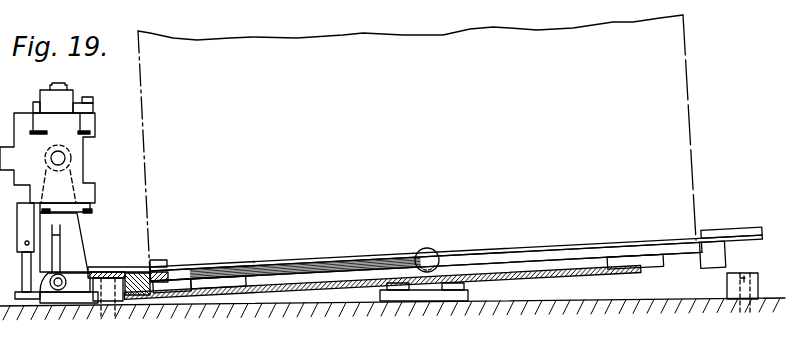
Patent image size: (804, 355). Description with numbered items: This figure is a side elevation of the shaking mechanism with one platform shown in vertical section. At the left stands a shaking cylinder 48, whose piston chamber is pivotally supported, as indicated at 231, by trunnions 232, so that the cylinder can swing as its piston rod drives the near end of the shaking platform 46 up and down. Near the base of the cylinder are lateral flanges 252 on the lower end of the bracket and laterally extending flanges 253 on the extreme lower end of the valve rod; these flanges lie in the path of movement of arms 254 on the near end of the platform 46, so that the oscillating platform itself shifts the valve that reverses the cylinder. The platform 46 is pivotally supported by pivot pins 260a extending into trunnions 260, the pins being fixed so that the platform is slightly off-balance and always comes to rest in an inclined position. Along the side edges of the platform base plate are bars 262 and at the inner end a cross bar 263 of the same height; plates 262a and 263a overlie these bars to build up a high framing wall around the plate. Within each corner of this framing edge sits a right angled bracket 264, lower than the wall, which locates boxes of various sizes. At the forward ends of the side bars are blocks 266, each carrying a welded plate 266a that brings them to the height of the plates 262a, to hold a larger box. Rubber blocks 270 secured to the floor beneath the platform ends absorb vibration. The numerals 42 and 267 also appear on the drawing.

The shaking cylinder 48 is at (67, 124).
The pivotal support 231 is at (65, 160).
The lateral flanges 252 is at (38, 253).
The laterally extending flanges 253 is at (25, 300).
The trunnions 232 is at (73, 255).
The arms 254 is at (43, 290).
The cross bar 263 is at (138, 297).
The plate 263a is at (132, 275).
The stop block 42 is at (162, 262).
The plate 262a is at (463, 253).
The bars 262 is at (360, 270).
The shaking platform 46 is at (528, 267).
The right angled bracket 264 is at (180, 283).
The bottom strip 267 is at (307, 278).
The plate 266a is at (712, 242).
The blocks 266 is at (708, 255).
The pivot pins 260a is at (425, 248).
The trunnions 260 is at (437, 295).
The rubber blocks 270 is at (730, 288).